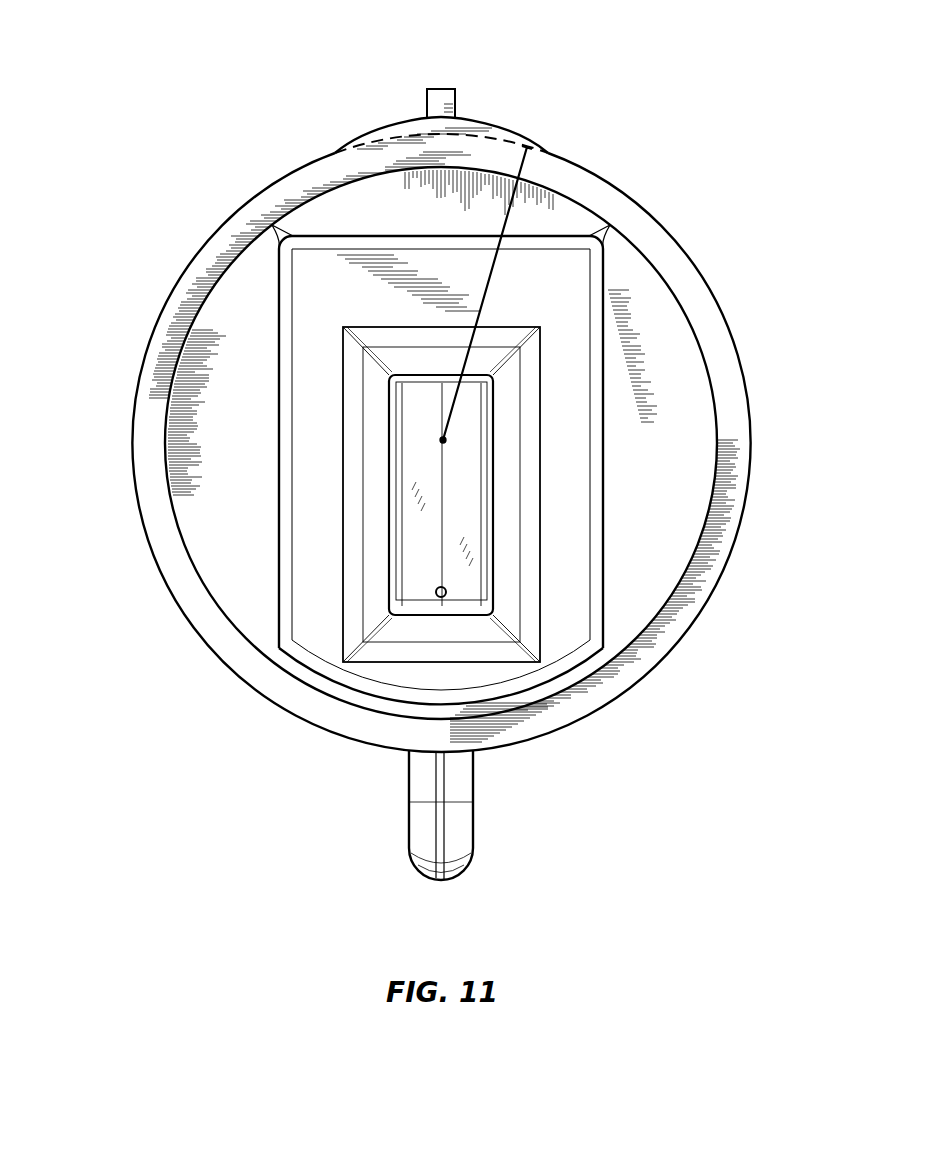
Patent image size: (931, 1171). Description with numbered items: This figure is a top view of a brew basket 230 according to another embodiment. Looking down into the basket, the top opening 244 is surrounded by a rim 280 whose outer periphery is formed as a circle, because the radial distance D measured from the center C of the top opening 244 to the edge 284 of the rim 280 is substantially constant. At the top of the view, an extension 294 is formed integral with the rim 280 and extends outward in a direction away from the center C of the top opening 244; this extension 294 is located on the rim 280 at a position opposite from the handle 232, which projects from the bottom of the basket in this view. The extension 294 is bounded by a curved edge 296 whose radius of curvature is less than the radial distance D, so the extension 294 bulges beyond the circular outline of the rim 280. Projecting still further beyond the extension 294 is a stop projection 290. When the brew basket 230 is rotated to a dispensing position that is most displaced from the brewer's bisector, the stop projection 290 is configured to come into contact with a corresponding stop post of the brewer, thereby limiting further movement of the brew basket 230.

The brew basket 230 is at (200, 170).
The handle 232 is at (452, 813).
The top opening 244 is at (338, 184).
The rim 280 is at (175, 575).
The edge 284 is at (177, 278).
The stop projection 290 is at (441, 96).
The extension 294 is at (400, 127).
The curved edge 296 is at (485, 120).
The center C is at (443, 440).
The radial distance D is at (508, 217).